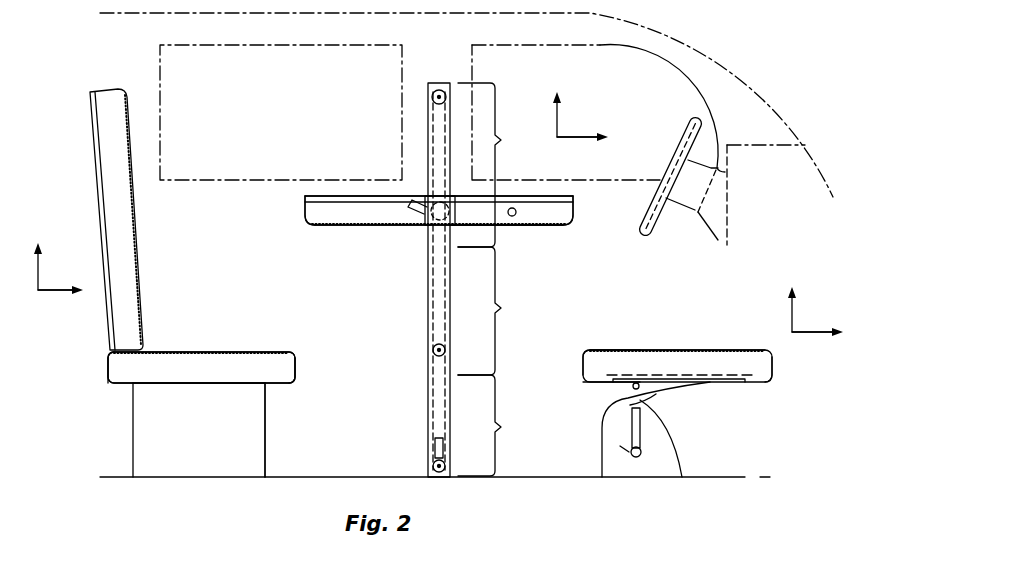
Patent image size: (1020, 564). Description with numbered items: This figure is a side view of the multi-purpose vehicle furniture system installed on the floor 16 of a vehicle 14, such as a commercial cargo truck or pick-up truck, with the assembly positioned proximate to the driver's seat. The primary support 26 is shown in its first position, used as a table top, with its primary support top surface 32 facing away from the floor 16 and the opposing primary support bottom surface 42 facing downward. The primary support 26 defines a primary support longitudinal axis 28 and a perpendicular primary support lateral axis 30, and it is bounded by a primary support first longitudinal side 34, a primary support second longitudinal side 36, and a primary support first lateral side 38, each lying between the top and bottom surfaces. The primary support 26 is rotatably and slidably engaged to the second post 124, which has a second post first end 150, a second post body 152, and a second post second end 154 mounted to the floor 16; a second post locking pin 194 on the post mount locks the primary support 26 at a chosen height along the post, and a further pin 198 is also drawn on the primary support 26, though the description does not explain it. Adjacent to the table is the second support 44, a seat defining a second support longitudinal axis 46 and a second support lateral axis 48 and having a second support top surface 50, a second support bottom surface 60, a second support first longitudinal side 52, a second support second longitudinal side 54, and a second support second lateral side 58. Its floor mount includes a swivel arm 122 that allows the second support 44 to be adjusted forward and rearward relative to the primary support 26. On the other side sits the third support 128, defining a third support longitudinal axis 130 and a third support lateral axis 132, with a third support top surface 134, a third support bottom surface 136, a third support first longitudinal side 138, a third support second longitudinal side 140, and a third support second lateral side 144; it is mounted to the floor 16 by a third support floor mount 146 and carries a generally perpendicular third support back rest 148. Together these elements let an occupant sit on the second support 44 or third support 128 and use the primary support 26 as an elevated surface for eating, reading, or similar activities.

The vehicle 14 is at (752, 48).
The floor 16 is at (562, 474).
The primary support 26 is at (584, 210).
The primary support longitudinal axis 28 is at (576, 138).
The primary support lateral axis 30 is at (559, 118).
The primary support top surface 32 is at (318, 196).
The primary support first longitudinal side 34 is at (552, 226).
The primary support second longitudinal side 36 is at (305, 206).
The primary support first lateral side 38 is at (544, 230).
The primary support bottom surface 42 is at (333, 236).
The second support 44 is at (720, 332).
The second support longitudinal axis 46 is at (794, 318).
The second support lateral axis 48 is at (812, 334).
The second support top surface 50 is at (657, 350).
The second support first longitudinal side 52 is at (774, 369).
The second support second longitudinal side 54 is at (584, 371).
The second support second lateral side 58 is at (611, 356).
The second support bottom surface 60 is at (726, 383).
The swivel arm 122 is at (642, 411).
The second post 124 is at (412, 398).
The third support 128 is at (172, 342).
The third support longitudinal axis 130 is at (40, 265).
The third support lateral axis 132 is at (58, 291).
The third support top surface 134 is at (250, 351).
The third support bottom surface 136 is at (245, 386).
The third support first longitudinal side 138 is at (296, 372).
The third support second longitudinal side 140 is at (108, 371).
The third support second lateral side 144 is at (168, 378).
The third support floor mount 146 is at (207, 482).
The third support back rest 148 is at (98, 180).
The second post first end 150 is at (503, 165).
The second post body 152 is at (505, 311).
The second post second end 154 is at (506, 425).
The second post locking pin 194 is at (412, 220).
The pin 198 is at (513, 217).